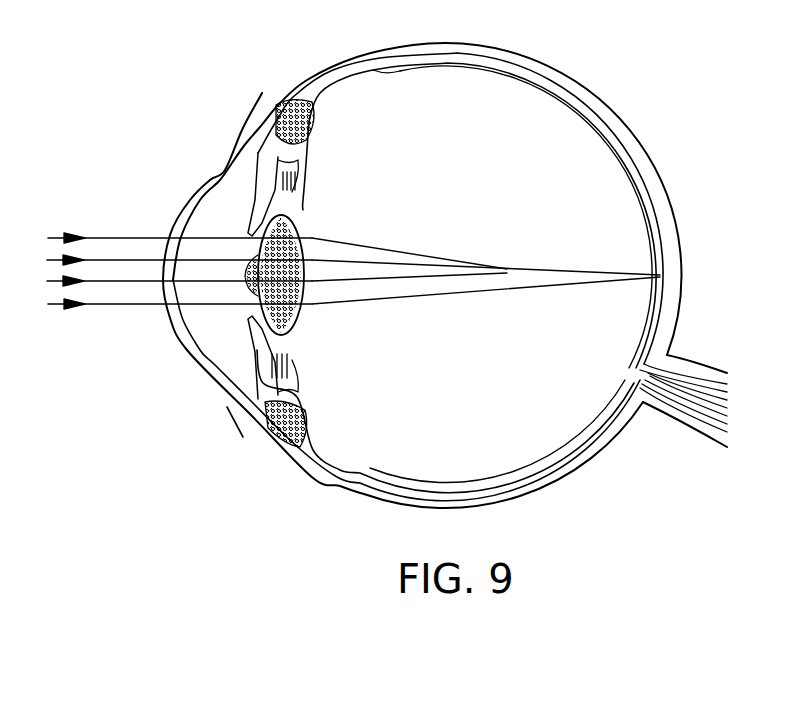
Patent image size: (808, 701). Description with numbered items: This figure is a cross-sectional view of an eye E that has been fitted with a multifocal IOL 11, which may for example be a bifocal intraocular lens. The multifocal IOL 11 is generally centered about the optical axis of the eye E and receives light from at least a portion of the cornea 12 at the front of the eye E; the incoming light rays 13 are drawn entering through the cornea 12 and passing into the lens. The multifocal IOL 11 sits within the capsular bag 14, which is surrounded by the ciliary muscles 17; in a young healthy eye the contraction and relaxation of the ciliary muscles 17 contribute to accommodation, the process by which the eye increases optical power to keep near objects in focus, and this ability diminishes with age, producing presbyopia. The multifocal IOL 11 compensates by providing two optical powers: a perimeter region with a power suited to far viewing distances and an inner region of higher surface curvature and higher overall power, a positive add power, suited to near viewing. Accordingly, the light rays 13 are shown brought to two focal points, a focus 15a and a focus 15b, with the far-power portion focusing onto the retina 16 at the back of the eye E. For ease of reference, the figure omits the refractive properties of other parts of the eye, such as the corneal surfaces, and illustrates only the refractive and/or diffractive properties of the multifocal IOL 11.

The eye E is at (697, 124).
The multifocal IOL 11 is at (295, 225).
The cornea 12 is at (200, 367).
The incident light rays 13 is at (114, 200).
The capsular bag 14 is at (302, 330).
The focal point on retina 15a is at (667, 279).
The focal point in vitreous 15b is at (507, 272).
The retina 16 is at (662, 226).
The ciliary muscles 17 is at (318, 114).